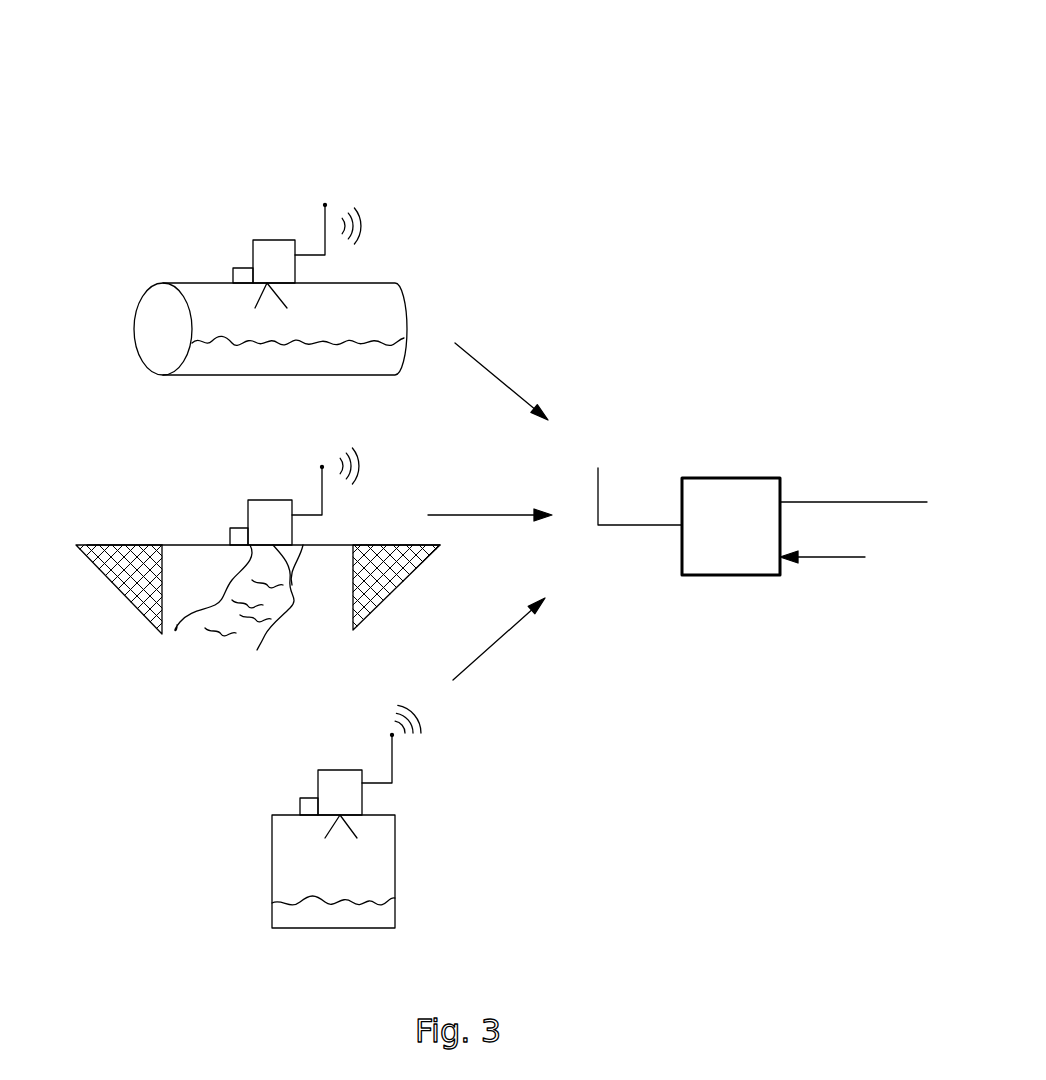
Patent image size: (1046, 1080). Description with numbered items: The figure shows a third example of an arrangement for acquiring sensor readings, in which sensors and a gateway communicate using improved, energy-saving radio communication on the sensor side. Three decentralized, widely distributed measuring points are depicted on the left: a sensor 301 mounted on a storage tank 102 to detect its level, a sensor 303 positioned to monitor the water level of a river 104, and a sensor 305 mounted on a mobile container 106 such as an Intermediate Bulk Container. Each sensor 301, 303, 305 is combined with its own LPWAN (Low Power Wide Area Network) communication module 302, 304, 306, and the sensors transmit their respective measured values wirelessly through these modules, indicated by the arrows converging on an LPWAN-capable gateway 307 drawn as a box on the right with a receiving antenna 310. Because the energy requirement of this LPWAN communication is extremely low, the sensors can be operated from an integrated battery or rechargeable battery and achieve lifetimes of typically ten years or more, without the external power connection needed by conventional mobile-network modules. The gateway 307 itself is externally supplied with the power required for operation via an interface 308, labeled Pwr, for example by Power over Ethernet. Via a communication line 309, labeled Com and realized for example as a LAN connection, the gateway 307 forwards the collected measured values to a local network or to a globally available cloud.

The storage tank 102 is at (137, 313).
The river 104 is at (200, 637).
The mobile container 106 is at (272, 868).
The sensor 301 is at (267, 240).
The LPWAN communication module 302 is at (325, 205).
The sensor 303 is at (258, 498).
The LPWAN communication module 304 is at (322, 467).
The sensor 305 is at (318, 778).
The LPWAN communication module 306 is at (392, 735).
The LPWAN-capable gateway 307 is at (728, 578).
The interface 308 is at (842, 560).
The communication line 309 is at (888, 500).
The receiver antenna 310 is at (598, 480).